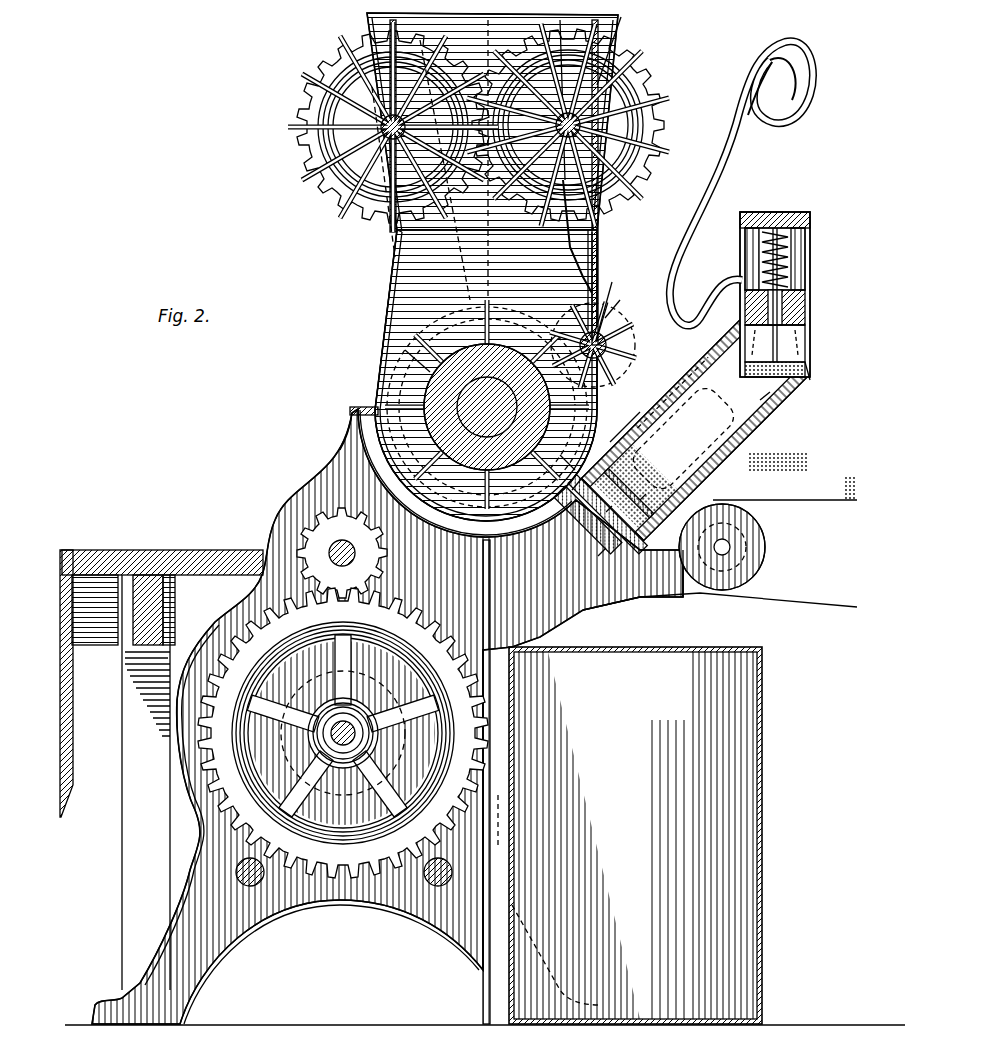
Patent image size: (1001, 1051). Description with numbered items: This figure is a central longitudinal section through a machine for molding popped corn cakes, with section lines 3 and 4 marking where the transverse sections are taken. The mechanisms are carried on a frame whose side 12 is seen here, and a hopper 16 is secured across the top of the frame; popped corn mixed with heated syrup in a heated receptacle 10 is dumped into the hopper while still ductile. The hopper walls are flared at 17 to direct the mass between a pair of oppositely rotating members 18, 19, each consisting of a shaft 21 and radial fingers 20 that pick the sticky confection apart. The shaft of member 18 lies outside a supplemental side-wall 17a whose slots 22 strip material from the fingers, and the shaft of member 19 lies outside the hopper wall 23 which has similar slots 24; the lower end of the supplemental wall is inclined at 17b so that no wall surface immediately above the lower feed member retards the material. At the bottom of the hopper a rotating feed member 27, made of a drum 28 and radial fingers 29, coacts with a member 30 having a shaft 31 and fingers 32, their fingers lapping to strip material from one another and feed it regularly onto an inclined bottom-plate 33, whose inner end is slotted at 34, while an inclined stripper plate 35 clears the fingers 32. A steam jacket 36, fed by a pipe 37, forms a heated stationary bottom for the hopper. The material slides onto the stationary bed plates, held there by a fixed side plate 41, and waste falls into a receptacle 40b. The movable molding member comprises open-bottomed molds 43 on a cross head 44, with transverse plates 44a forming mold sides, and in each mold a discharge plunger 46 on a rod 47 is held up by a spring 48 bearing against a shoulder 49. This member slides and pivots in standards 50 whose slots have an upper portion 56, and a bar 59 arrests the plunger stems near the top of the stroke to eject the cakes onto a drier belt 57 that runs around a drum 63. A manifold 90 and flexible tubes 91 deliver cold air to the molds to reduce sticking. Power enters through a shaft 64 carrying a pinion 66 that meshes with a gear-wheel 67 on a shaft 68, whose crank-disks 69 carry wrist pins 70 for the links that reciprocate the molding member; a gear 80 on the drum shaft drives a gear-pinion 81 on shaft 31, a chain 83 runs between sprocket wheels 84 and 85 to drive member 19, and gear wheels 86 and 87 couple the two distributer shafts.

The section line 3— 3 is at (492, 508).
The section line 4— 4 is at (774, 295).
The heated receptacle 10 is at (74, 724).
The frame side 12 is at (286, 904).
The hopper 16 is at (501, 160).
The flared upper end of hopper wall 17 is at (372, 17).
The supplemental side-wall 17a is at (598, 240).
The inclined lower end portion of supplemental wall 17b is at (569, 262).
The rotatable member 18 is at (636, 85).
The rotatable member 19 is at (326, 99).
The radial fingers 20 is at (345, 217).
The shaft 21 is at (300, 139).
The slots 22 is at (600, 212).
The hopper wall 23 is at (394, 276).
The slots 24 is at (378, 221).
The rotating feed member 27 is at (487, 398).
The drum 28 is at (400, 381).
The radial fingers 29 is at (485, 322).
The coacting feed member 30 is at (605, 345).
The shaft 31 is at (607, 316).
The radial fingers 32 is at (626, 380).
The inclined bottom-plate 33 is at (646, 437).
The slot 34 is at (589, 433).
The inclined stripper plate 35 is at (632, 402).
The steam jacket 36 is at (372, 455).
The steam pipe 37 is at (482, 986).
The receptacle 40b is at (635, 835).
The fixed side plate 41 is at (700, 512).
The open-bottomed molds 43 is at (800, 347).
The cross head 44 is at (806, 300).
The transverse plates 44a is at (806, 318).
The discharge plunger 46 is at (808, 382).
The rod 47 is at (790, 292).
The spring 48 is at (782, 262).
The shoulder 49 is at (790, 240).
The standards 50 is at (682, 439).
The upper slot portion 56 is at (812, 366).
The drier belt 57 is at (814, 503).
The bar 59 is at (810, 214).
The drum 63 is at (767, 551).
The shaft 64 is at (341, 542).
The pinion 66 is at (300, 535).
The gear-wheel 67 is at (236, 636).
The shaft 68 is at (332, 729).
The crank-disks 69 is at (342, 730).
The wrist pins 70 is at (343, 733).
The gear 80 is at (404, 350).
The gear-pinion 81 is at (603, 300).
The chain 83 is at (431, 172).
The sprocket wheel 84 is at (354, 408).
The sprocket wheel 85 is at (436, 170).
The gear wheel 86 is at (660, 96).
The gear wheel 87 is at (338, 63).
The manifold 90 is at (748, 172).
The flexible tubes 91 is at (764, 132).